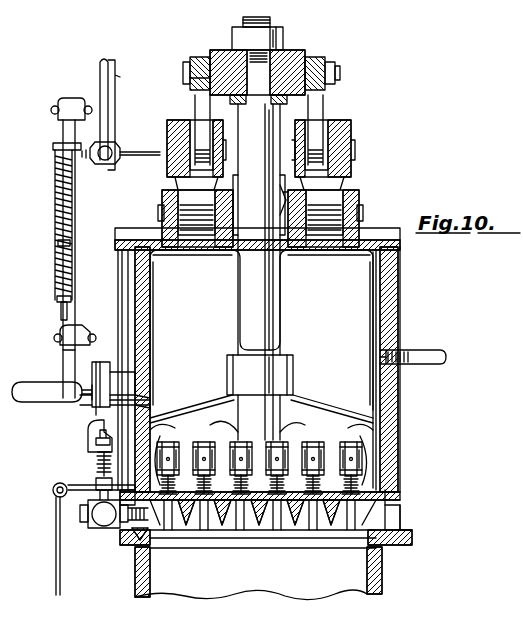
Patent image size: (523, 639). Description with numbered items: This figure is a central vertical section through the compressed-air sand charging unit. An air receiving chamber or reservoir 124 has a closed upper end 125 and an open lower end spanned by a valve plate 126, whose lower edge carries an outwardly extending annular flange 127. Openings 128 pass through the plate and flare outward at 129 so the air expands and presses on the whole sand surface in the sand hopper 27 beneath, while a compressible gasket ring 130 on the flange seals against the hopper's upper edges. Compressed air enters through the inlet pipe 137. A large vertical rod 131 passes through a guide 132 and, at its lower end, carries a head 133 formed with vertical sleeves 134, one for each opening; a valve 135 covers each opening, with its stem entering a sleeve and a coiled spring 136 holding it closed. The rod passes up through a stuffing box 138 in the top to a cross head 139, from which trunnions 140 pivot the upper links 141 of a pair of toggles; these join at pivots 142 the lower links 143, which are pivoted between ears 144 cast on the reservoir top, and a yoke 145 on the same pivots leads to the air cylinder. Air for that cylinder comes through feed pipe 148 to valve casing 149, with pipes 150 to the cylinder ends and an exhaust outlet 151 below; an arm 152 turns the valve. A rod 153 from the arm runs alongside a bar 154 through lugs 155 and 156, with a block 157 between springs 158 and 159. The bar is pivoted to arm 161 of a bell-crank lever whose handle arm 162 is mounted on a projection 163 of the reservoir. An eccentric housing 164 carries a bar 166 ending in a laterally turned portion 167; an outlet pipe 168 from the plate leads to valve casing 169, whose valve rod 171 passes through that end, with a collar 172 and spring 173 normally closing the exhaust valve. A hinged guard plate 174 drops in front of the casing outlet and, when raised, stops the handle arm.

The sand hopper 27 is at (384, 576).
The air receiving chamber or reservoir 124 is at (388, 312).
The closed upper end 125 is at (322, 254).
The valve plate 126 is at (390, 513).
The annular flange 127 is at (412, 527).
The openings 128 is at (240, 505).
The flared portions of openings 129 is at (352, 505).
The compressible gasket ring 130 is at (400, 540).
The rod 131 is at (275, 340).
The guide 132 is at (295, 380).
The head 133 is at (300, 413).
The vertical sleeves 134 is at (245, 445).
The valves 135 is at (360, 488).
The coiled spring 136 is at (165, 432).
The inlet pipe 137 is at (426, 355).
The stuffing box 138 is at (285, 208).
The cross head 139 is at (290, 58).
The trunnions 140 is at (200, 70).
The upper links 141 is at (198, 108).
The pivotal connection 142 is at (348, 152).
The links 143 is at (175, 230).
The ears 144 is at (160, 214).
The yoke 145 is at (185, 135).
The feed pipe 148 is at (112, 84).
The valve casing 149 is at (78, 140).
The pipes 150 is at (120, 154).
The exhaust outlet 151 is at (233, 205).
The arm 152 is at (96, 100).
The rod 153 is at (66, 120).
The bar 154 is at (66, 330).
The lug 155 is at (58, 151).
The lug 156 is at (60, 307).
The block 157 is at (60, 252).
The spring 158 is at (57, 194).
The spring 159 is at (58, 293).
The arm of bell crank lever 161 is at (75, 335).
The handle arm 162 is at (48, 393).
The outstanding projection 163 is at (112, 393).
The eccentric housing 164 is at (112, 400).
The bar 166 is at (98, 434).
The laterally turned end portion 167 is at (88, 359).
The outlet pipe 168 is at (138, 541).
The valve casing 169 is at (104, 529).
The rod 171 is at (96, 509).
The collar 172 is at (98, 485).
The spring 173 is at (56, 493).
The guard plate 174 is at (56, 571).